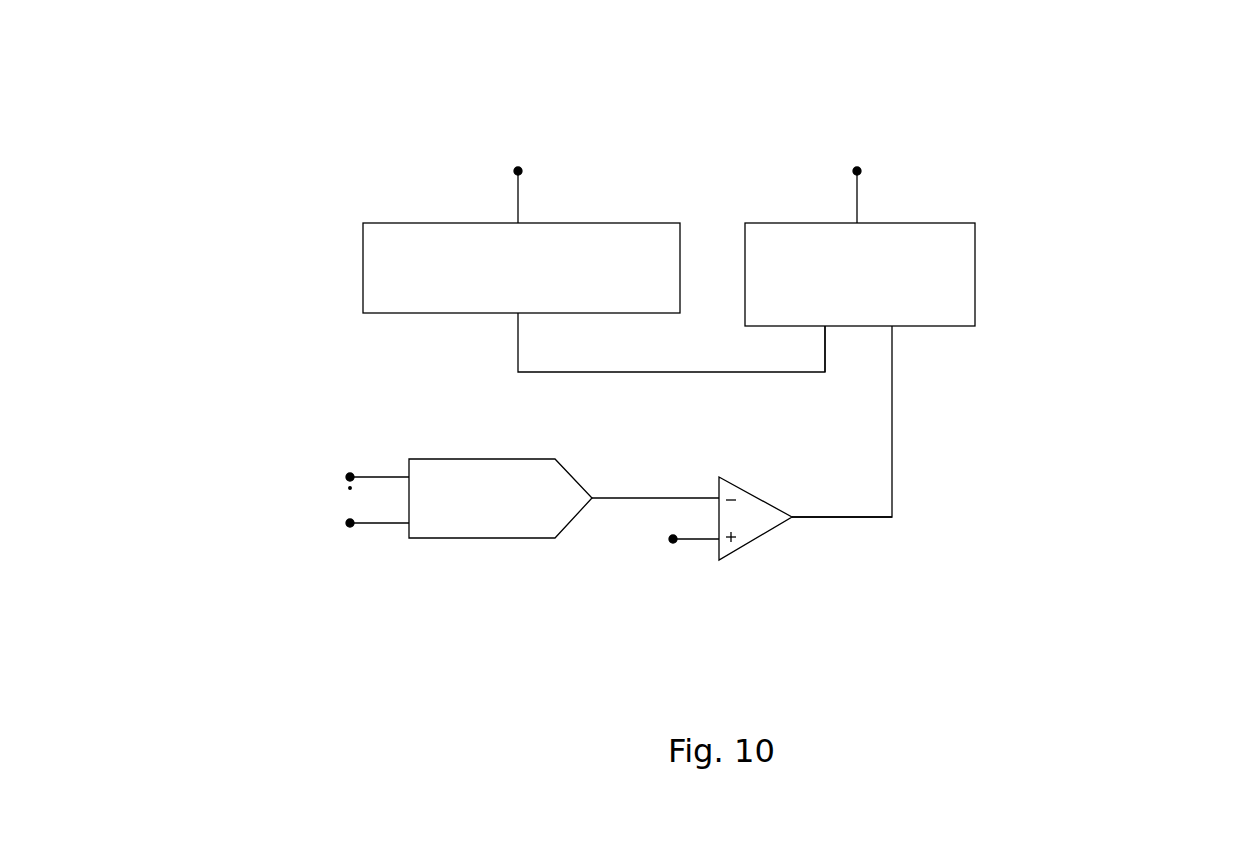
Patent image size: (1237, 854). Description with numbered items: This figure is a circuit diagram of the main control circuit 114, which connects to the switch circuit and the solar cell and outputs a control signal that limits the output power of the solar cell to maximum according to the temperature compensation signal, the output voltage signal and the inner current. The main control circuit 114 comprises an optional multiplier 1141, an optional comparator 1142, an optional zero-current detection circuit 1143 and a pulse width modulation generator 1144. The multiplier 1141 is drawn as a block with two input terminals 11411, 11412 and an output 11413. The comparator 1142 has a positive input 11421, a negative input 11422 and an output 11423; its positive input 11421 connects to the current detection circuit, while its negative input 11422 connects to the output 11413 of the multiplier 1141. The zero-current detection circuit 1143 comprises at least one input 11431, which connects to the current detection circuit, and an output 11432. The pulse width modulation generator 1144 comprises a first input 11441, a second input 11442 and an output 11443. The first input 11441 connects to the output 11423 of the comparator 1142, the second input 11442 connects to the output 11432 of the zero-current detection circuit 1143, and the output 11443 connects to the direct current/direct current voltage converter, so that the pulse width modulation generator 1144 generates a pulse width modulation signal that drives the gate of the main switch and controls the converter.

The main control circuit 114 is at (1017, 78).
The multiplier 1141 is at (470, 520).
The first input terminal A 11411 is at (380, 475).
The second input terminal B 11412 is at (380, 522).
The output of the multiplier 11413 is at (615, 500).
The comparator 1142 is at (747, 528).
The positive input 11421 is at (700, 540).
The negative input 11422 is at (678, 497).
The output of the comparator 11423 is at (843, 516).
The zero-current detection circuit 1143 is at (388, 265).
The input of the zero-current detection circuit 11431 is at (518, 200).
The output of the zero-current detection circuit 11432 is at (518, 341).
The pulse width modulation generator 1144 is at (966, 262).
The first input of the pulse width modulation generator 11441 is at (892, 337).
The second input of the pulse width modulation generator 11442 is at (825, 338).
The output of the pulse width modulation generator 11443 is at (857, 193).